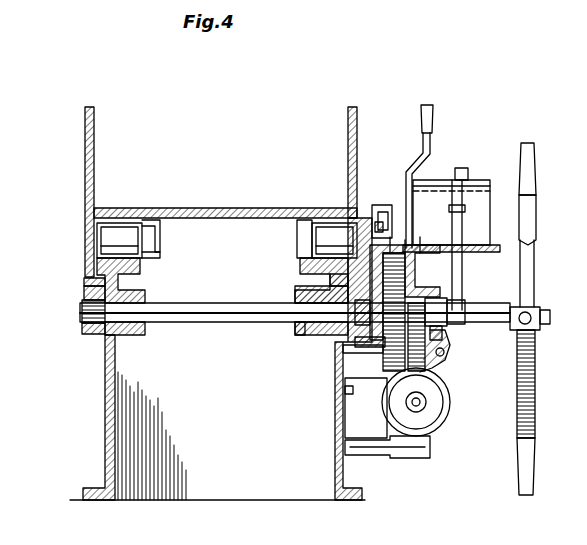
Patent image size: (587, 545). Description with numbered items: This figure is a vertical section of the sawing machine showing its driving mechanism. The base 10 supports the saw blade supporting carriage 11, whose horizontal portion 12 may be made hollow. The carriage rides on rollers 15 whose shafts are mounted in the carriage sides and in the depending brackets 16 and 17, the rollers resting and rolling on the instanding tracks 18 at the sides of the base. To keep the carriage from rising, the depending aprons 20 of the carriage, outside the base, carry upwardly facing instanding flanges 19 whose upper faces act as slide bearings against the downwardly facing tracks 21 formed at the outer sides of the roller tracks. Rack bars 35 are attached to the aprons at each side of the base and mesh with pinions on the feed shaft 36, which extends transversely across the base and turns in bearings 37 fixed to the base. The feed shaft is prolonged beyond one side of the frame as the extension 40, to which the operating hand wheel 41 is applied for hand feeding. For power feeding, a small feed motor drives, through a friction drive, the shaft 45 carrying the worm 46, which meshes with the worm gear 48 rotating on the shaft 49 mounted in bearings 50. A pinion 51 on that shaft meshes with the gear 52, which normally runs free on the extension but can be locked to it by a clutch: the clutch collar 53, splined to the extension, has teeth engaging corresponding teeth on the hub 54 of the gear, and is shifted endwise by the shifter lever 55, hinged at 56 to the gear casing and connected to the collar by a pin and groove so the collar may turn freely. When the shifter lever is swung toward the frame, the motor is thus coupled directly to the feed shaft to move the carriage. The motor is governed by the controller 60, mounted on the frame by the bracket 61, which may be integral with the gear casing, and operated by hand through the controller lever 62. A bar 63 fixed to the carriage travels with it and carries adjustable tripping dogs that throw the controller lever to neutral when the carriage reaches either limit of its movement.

The base 10 is at (108, 350).
The saw blade supporting carriage 11 is at (85, 152).
The horizontal portion 12 is at (233, 205).
The rollers 15 is at (118, 226).
The bracket 16 is at (150, 257).
The bracket 17 is at (157, 247).
The instanding tracks 18 is at (135, 268).
The instanding flanges 19 is at (84, 291).
The depending aprons 20 is at (85, 238).
The downwardly facing tracks 21 is at (84, 274).
The rack bars 35 is at (82, 308).
The feed shaft 36 is at (82, 327).
The bearings 37 is at (350, 325).
The feed shaft extension 40 is at (440, 312).
The operating hand wheel 41 is at (536, 270).
The shaft 45 is at (424, 410).
The worm 46 is at (395, 418).
The worm gear 48 is at (442, 425).
The shaft 49 is at (350, 352).
The bearings 50 is at (360, 343).
The pinion 51 is at (366, 408).
The gear 52 is at (422, 245).
The clutch collar 53 is at (447, 300).
The hub 54 is at (442, 332).
The shifter lever 55 is at (463, 263).
The hinge 56 is at (445, 354).
The controller 60 is at (462, 199).
The bracket 61 is at (445, 247).
The controller lever 62 is at (420, 162).
The bar 63 is at (384, 222).